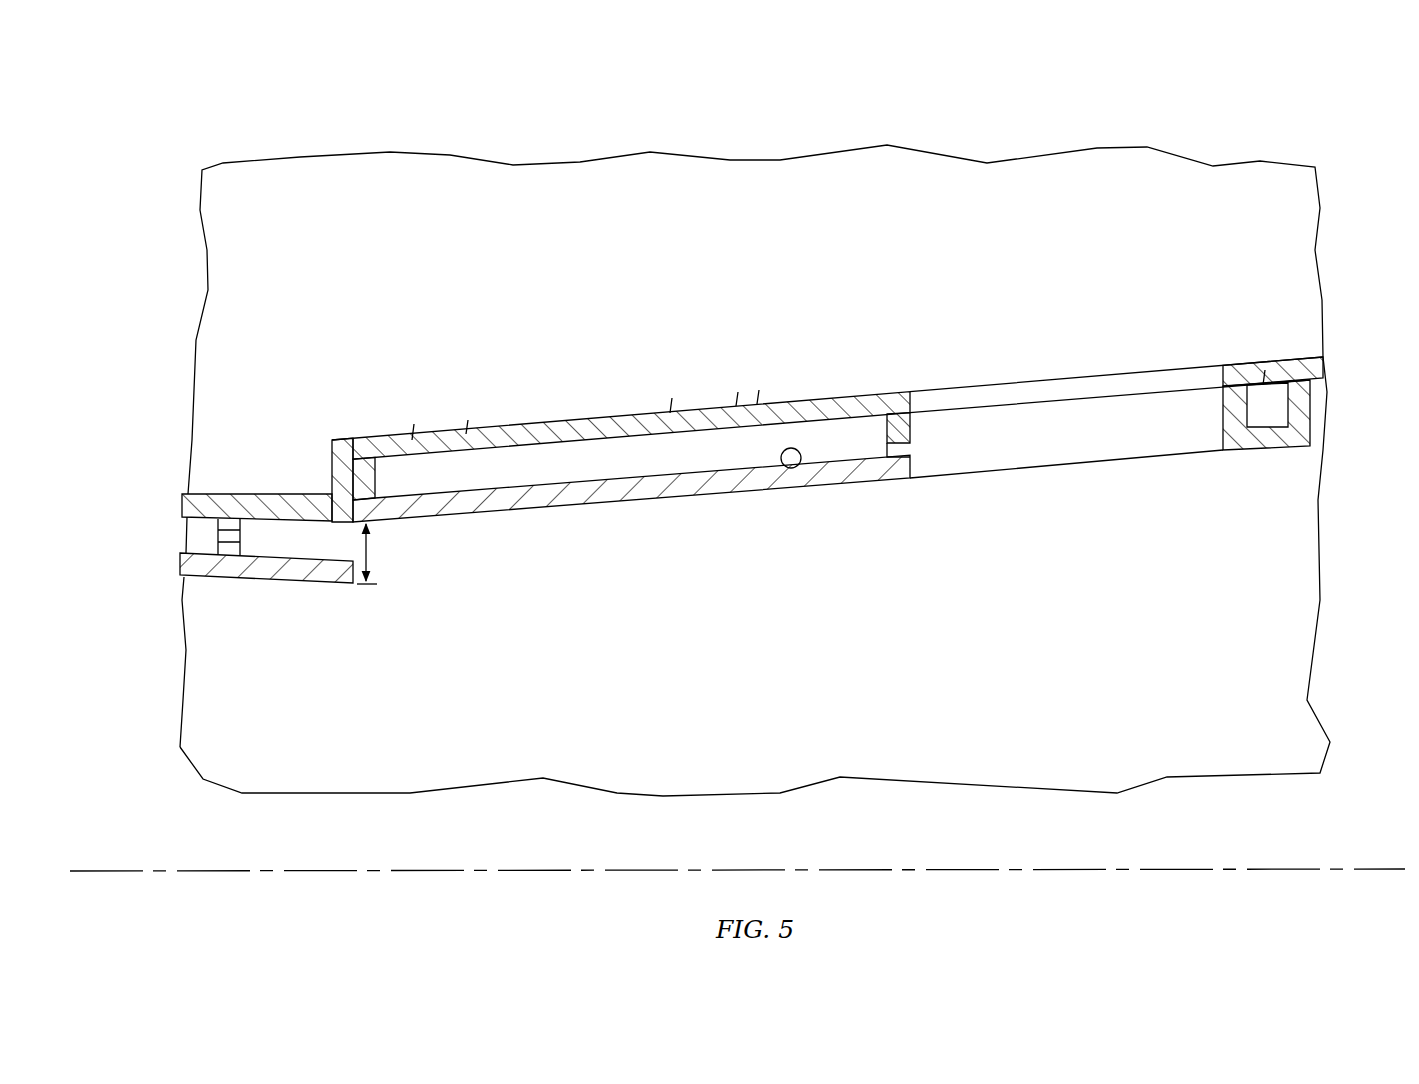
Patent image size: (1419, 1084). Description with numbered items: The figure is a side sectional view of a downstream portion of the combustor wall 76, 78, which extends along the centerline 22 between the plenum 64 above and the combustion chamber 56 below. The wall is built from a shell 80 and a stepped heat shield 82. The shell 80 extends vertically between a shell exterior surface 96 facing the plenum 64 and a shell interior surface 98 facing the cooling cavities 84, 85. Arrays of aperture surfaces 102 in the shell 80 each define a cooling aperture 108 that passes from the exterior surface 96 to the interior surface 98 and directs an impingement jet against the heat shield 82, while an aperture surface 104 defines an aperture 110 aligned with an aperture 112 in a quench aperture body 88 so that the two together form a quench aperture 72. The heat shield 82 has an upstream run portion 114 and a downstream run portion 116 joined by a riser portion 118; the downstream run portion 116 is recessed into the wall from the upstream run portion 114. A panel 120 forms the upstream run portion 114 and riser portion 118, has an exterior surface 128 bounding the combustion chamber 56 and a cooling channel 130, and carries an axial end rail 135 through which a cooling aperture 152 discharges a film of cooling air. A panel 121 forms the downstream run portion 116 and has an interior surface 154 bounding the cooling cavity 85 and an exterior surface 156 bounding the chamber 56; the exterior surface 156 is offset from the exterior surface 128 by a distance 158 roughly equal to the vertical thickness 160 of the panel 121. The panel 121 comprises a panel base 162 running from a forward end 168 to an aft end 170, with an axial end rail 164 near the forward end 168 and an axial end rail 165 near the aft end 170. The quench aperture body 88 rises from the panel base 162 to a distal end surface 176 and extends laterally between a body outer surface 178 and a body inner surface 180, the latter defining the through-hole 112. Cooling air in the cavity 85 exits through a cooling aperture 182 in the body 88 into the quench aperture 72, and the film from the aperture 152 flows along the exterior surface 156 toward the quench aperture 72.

The centerline 22 is at (1386, 862).
The combustion chamber 56 is at (797, 755).
The plenum 64 is at (789, 212).
The quench aperture 72 is at (1064, 462).
The combustor wall 76 is at (1356, 97).
The combustor wall 78 is at (1293, 132).
The shell 80 is at (345, 441).
The heat shield 82 is at (532, 540).
The cooling cavity 84 is at (195, 528).
The cooling cavity 85 is at (553, 462).
The quench aperture body 88 is at (1228, 407).
The shell exterior surface 96 is at (1323, 360).
The shell interior surface 98 is at (1327, 392).
The aperture surface 102 is at (748, 404).
The aperture surface 104 is at (918, 393).
The cooling aperture 108 is at (412, 440).
The aperture 110 is at (985, 393).
The aperture 112 is at (972, 466).
The upstream run portion 114 is at (238, 594).
The downstream run portion 116 is at (737, 508).
The riser portion 118 is at (406, 572).
The panel 120 is at (178, 563).
The panel 121 is at (607, 507).
The exterior surface 128 is at (198, 582).
The cooling channel 130 is at (293, 548).
The axial end rail 135 is at (228, 551).
The cooling aperture 152 is at (228, 518).
The interior surface 154 is at (792, 464).
The exterior surface 156 is at (846, 486).
The distance 158 is at (368, 588).
The vertical thickness 160 is at (390, 428).
The panel base 162 is at (655, 492).
The axial end rail 164 is at (370, 484).
The axial end rail 165 is at (1300, 413).
The forward end 168 is at (343, 489).
The aft end 170 is at (1320, 436).
The distal end surface 176 is at (1237, 368).
The body outer surface 178 is at (1257, 428).
The body inner surface 180 is at (1220, 399).
The cooling aperture 182 is at (897, 450).